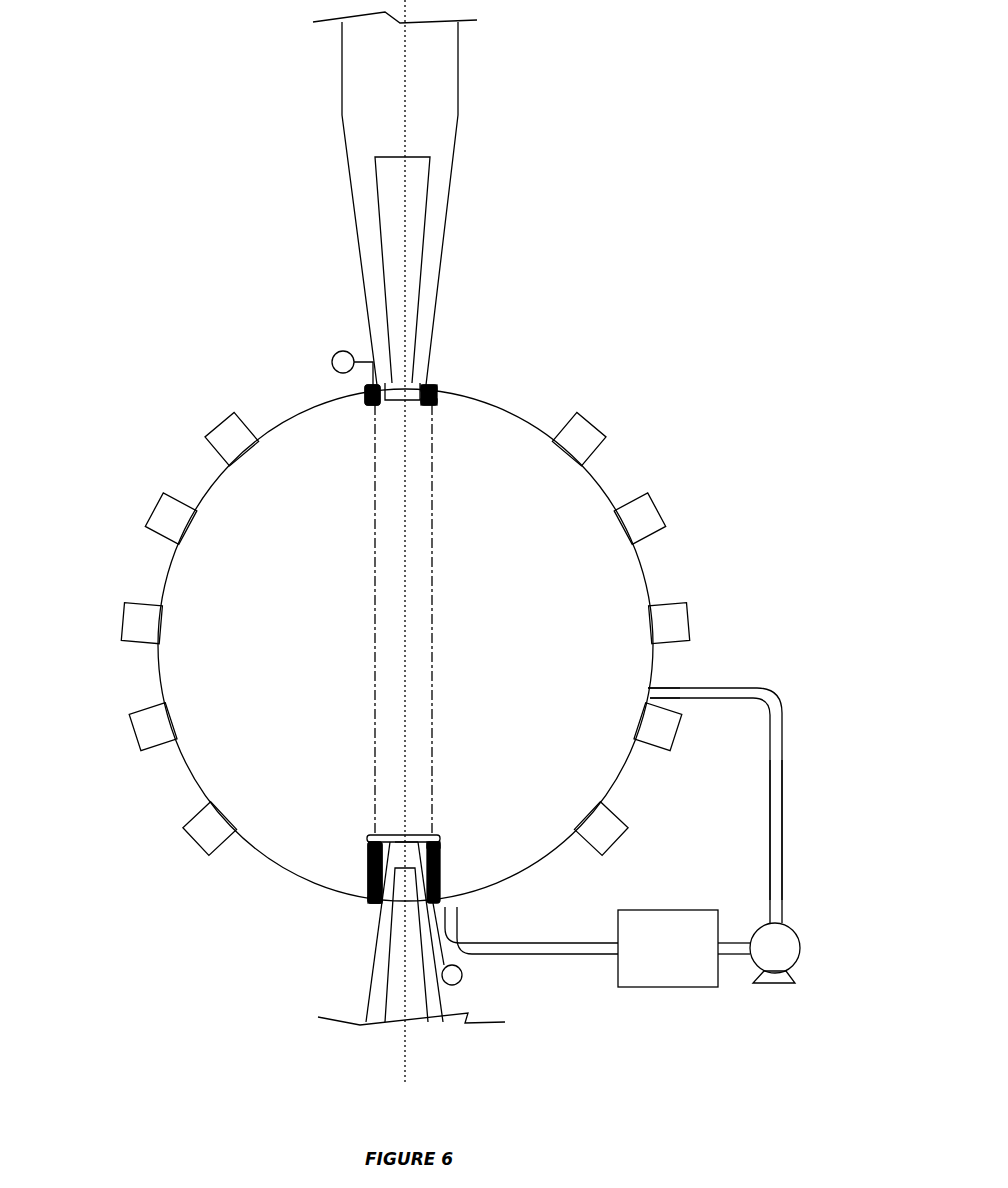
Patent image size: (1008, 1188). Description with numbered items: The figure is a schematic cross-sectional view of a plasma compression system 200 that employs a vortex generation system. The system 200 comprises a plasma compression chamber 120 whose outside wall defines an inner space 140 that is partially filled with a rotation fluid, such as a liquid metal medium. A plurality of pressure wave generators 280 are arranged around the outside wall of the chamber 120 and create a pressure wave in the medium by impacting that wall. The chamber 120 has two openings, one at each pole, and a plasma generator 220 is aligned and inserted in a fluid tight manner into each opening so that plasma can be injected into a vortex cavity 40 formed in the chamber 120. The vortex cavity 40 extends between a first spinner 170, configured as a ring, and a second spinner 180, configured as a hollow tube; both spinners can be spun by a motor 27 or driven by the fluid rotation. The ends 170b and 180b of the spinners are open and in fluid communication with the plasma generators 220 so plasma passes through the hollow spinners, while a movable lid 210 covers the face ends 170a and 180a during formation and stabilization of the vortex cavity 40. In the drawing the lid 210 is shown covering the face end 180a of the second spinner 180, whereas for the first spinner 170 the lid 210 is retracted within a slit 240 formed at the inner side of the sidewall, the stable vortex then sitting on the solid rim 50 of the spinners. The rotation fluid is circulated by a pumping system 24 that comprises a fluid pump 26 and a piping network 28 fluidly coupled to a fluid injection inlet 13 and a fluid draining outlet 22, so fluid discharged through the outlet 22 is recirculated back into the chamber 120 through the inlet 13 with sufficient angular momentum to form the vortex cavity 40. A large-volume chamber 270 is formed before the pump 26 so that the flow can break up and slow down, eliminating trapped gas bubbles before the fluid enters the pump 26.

The plasma compression system 200 is at (173, 257).
The plasma generator 220 is at (437, 293).
The motor 27 is at (331, 361).
The first spinner 170 is at (444, 392).
The face end of the first spinner 170a is at (430, 412).
The end of the first spinner 170b is at (432, 388).
The solid rim 50 is at (369, 408).
The plasma compression chamber 120 is at (222, 476).
The pressure wave generators 280 is at (130, 625).
The inner space 140 is at (304, 604).
The vortex cavity 40 is at (436, 620).
The fluid injection inlet 13 is at (654, 688).
The pumping system 24 is at (805, 782).
The piping network 28 is at (783, 858).
The fluid pump 26 is at (798, 932).
The movable lid 210 is at (410, 834).
The second spinner 180 is at (364, 858).
The face end of the second spinner 180a is at (440, 834).
The bottom end of the second spinner 180b is at (373, 905).
The slit 240 is at (367, 838).
The fluid draining outlet 22 is at (455, 907).
The chamber 270 is at (681, 990).